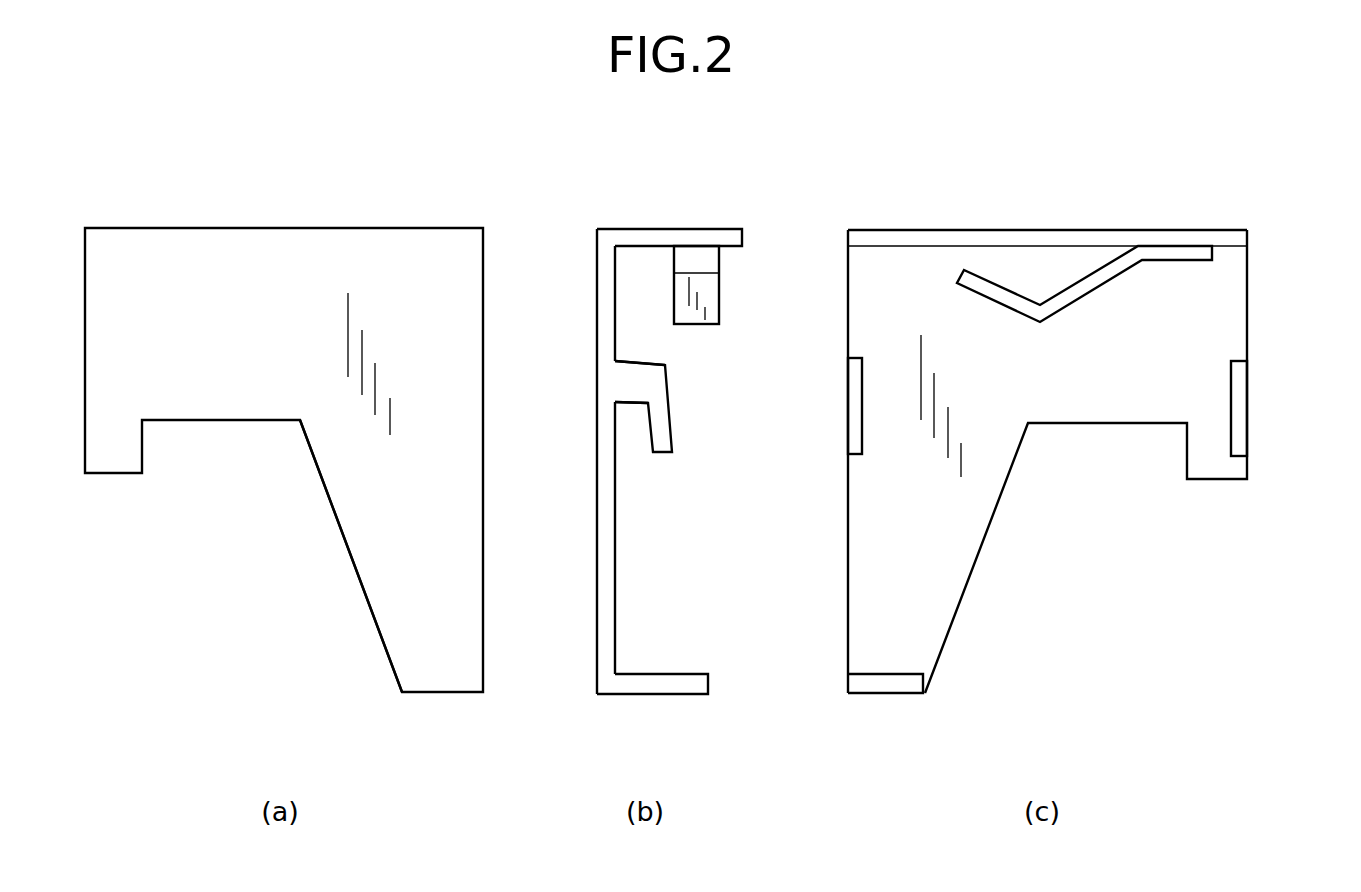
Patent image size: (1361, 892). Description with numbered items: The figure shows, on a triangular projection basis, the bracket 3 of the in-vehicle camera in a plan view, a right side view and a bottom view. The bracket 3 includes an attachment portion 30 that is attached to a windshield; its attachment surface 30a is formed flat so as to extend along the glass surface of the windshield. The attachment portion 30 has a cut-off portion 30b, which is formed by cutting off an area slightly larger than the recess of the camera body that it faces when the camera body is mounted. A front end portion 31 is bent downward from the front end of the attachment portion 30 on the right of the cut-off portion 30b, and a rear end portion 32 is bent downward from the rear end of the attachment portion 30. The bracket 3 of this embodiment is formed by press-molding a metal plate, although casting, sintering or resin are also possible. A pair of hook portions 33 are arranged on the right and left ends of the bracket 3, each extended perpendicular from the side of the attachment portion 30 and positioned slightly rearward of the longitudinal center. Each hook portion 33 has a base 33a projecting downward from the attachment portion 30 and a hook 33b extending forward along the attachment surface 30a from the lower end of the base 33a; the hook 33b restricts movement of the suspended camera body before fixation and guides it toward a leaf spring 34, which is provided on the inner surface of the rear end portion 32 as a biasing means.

The bracket 3 is at (418, 172).
The attachment portion 30 is at (597, 437).
The attachment surface 30a is at (250, 248).
The cut-off portion 30b is at (342, 533).
The front end portion 31 is at (638, 695).
The rear end portion 32 is at (643, 237).
The hook portion 33 is at (672, 427).
The base 33a is at (640, 375).
The hook 33b is at (662, 412).
The leaf spring 34 is at (722, 297).